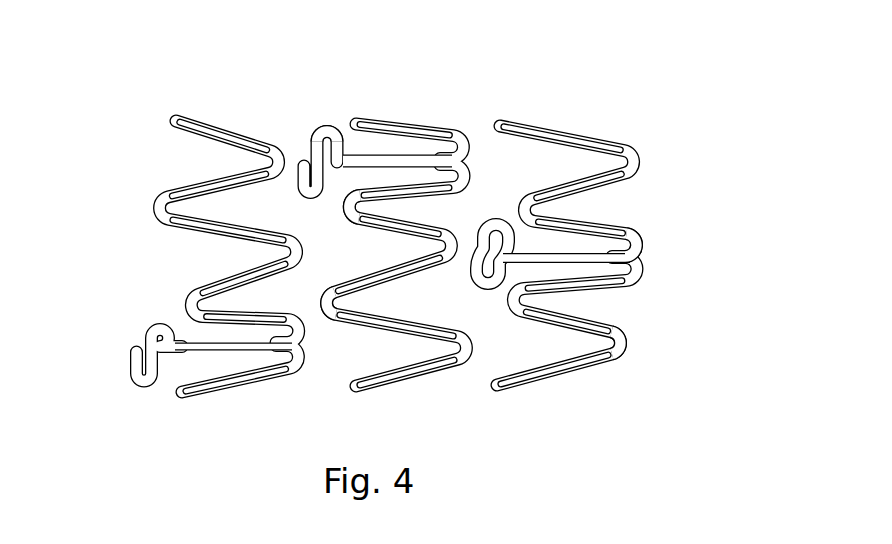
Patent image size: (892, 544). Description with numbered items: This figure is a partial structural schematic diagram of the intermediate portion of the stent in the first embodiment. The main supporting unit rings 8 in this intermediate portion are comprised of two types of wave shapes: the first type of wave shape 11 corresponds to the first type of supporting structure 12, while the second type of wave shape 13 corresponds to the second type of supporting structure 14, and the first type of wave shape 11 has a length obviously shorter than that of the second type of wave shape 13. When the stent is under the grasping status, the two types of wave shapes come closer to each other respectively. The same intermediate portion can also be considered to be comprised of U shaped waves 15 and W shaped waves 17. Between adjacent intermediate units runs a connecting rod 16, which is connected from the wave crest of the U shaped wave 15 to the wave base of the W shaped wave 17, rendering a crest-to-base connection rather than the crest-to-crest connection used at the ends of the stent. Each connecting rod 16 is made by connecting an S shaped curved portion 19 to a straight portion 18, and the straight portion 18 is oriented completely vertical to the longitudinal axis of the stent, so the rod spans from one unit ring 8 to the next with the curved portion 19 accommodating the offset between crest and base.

The main supporting unit ring 8 is at (387, 110).
The first type of wave shape 11 is at (338, 219).
The first type of supporting structure 12 is at (407, 193).
The second type of wave shape 13 is at (343, 322).
The second type of supporting structure 14 is at (397, 287).
The U shaped wave 15 is at (612, 373).
The connecting rod 16 is at (308, 118).
The W shaped wave 17 is at (643, 232).
The straight portion 18 is at (400, 155).
The S shaped curved portion 19 is at (330, 120).